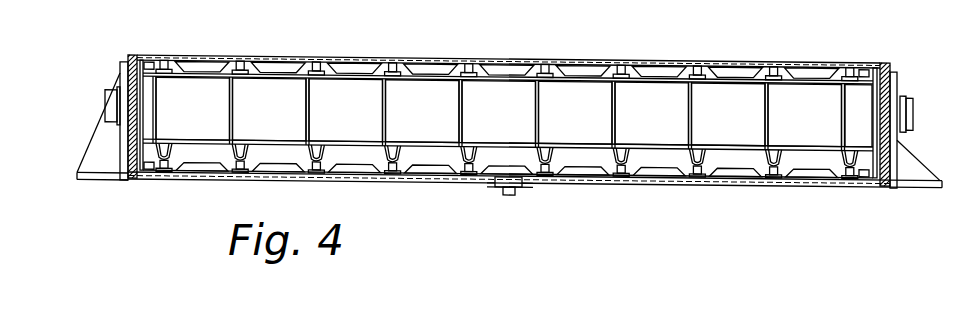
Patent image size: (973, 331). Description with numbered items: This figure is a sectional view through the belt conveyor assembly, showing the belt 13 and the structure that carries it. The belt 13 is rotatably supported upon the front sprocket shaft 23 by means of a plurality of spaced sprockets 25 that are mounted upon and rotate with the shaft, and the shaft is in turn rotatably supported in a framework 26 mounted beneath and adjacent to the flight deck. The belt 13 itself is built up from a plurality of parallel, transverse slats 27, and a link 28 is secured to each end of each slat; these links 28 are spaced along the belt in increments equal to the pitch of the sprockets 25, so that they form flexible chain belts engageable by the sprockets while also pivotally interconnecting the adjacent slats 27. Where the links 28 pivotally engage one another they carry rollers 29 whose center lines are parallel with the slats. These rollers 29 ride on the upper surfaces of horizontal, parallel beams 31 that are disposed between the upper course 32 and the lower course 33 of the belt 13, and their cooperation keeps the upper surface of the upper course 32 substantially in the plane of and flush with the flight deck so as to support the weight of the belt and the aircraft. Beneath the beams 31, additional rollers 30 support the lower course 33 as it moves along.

The belt 13 is at (607, 52).
The front sprocket shaft 23 is at (913, 104).
The sprockets 25 is at (533, 144).
The framework 26 is at (922, 150).
The slats 27 is at (356, 54).
The links 28 is at (840, 65).
The rollers 29 is at (773, 61).
The rollers 30 is at (517, 174).
The beams 31 is at (610, 98).
The upper course 32 is at (506, 52).
The lower course 33 is at (387, 171).